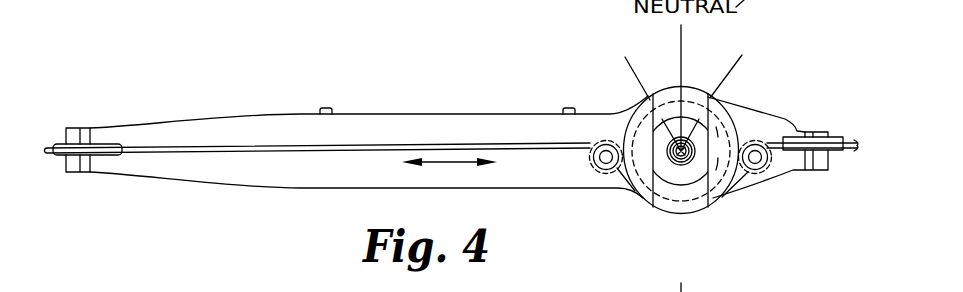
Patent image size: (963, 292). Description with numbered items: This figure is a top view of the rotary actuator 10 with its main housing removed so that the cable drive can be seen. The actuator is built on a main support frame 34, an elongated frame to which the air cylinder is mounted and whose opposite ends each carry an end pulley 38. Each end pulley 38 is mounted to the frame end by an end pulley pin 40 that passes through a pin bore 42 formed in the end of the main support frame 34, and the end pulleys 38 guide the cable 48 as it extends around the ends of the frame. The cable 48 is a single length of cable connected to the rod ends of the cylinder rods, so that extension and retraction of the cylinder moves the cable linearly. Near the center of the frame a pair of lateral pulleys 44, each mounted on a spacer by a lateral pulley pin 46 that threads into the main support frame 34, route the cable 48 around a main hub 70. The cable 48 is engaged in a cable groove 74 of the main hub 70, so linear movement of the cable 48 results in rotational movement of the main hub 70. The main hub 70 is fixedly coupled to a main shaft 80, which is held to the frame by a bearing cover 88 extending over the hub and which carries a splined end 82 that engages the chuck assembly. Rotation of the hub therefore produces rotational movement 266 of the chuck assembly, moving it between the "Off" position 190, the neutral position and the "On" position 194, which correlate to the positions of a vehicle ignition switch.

The rotary actuator 10 is at (200, 101).
The main support frame 34 is at (82, 127).
The end pulley 38 is at (60, 157).
The end pulley pin 40 is at (463, 160).
The pin bore 42 is at (88, 173).
The lateral pulley 44 is at (589, 163).
The lateral pulley pin 46 is at (606, 162).
The cable 48 is at (48, 145).
The main hub 70 is at (645, 140).
The cable groove 74 is at (641, 193).
The main shaft 80 is at (716, 206).
The splined end 82 is at (681, 151).
The bearing cover 88 is at (677, 208).
The "Off" position 190 is at (583, 43).
The "On" position 194 is at (783, 43).
The rotational movement 266 is at (722, 137).